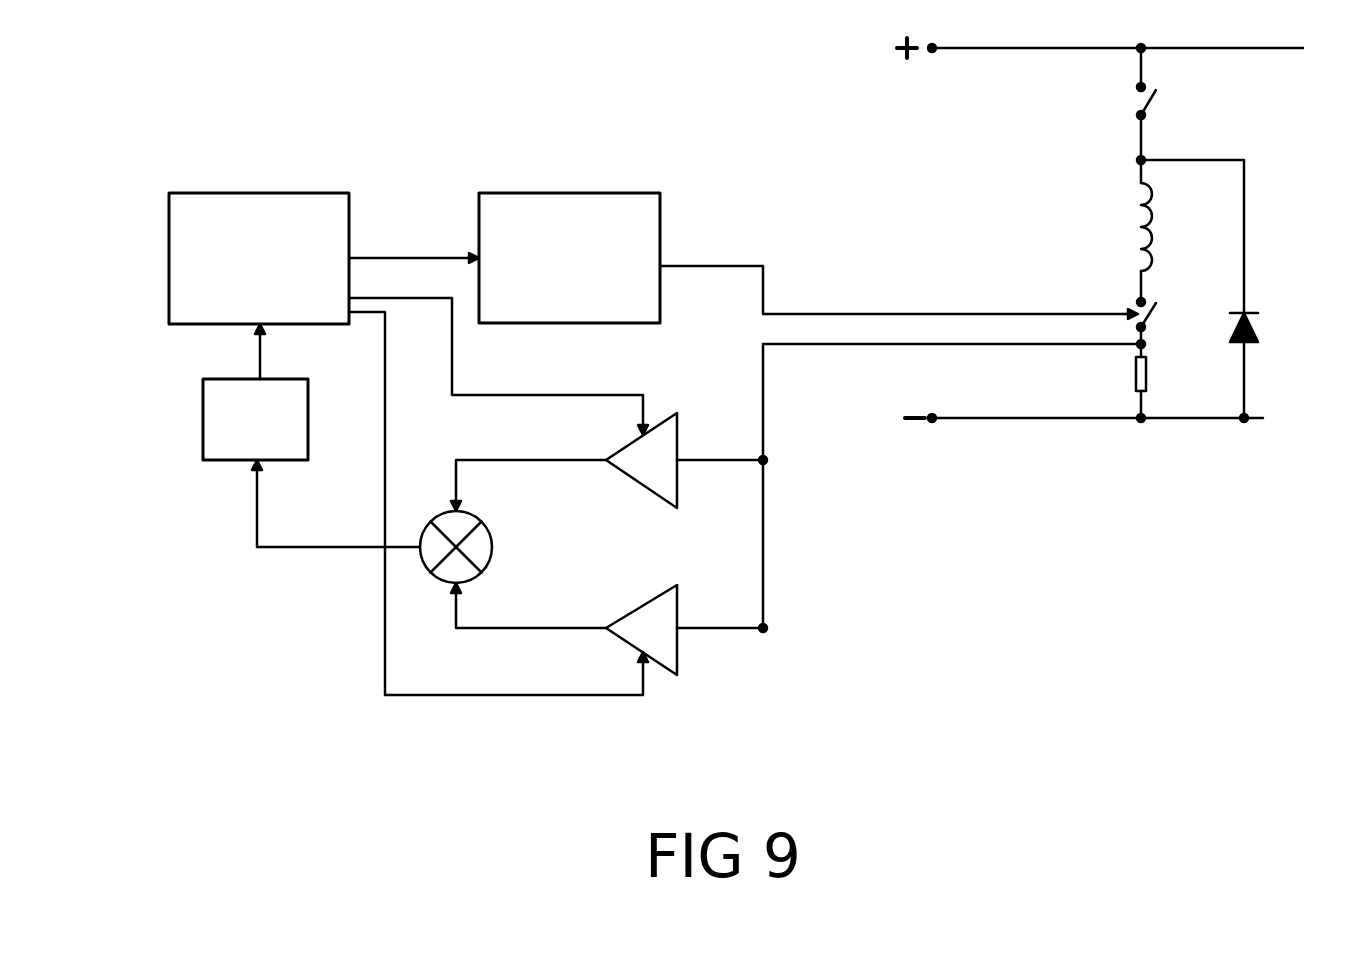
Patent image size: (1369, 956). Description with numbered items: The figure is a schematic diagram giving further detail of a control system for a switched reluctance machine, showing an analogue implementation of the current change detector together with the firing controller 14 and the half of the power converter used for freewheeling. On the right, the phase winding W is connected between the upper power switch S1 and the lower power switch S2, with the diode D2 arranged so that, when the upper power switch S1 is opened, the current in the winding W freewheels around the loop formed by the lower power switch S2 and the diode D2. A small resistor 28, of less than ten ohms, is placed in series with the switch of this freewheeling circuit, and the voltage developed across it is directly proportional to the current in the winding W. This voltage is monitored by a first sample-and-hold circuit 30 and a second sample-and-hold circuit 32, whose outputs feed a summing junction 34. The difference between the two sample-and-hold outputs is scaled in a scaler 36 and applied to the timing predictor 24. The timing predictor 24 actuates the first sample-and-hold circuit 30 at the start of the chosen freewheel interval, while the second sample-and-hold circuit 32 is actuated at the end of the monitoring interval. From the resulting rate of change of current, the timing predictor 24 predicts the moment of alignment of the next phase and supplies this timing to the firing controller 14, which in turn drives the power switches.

The timing predictor 24 is at (250, 203).
The firing controller 14 is at (560, 200).
The scaler 36 is at (218, 445).
The summing junction 34 is at (487, 539).
The first sample-and-hold circuit 30 is at (670, 478).
The second sample-and-hold circuit 32 is at (670, 657).
The resistor 28 is at (1135, 371).
The upper power switch S1 is at (1136, 102).
The lower power switch S2 is at (1158, 312).
The phase winding W is at (1160, 205).
The diode D2 is at (1262, 322).